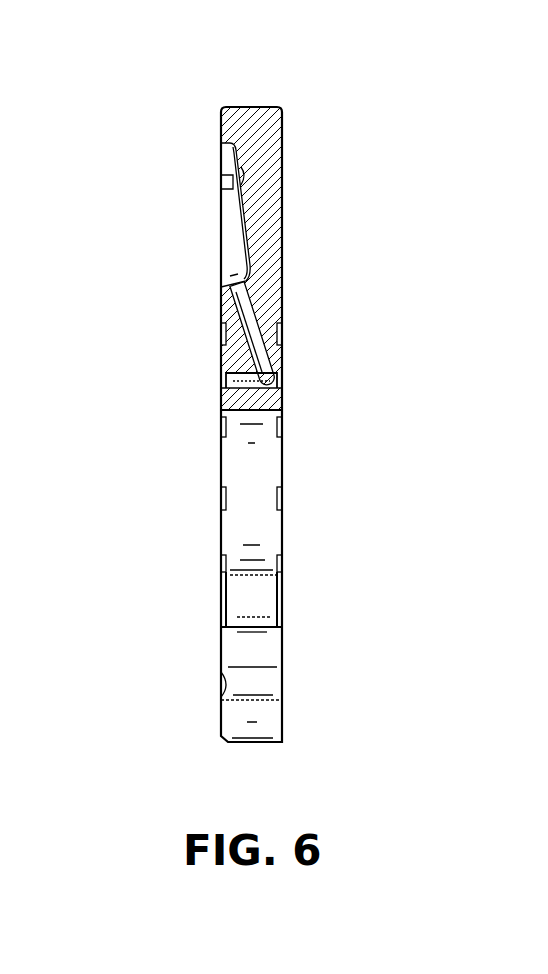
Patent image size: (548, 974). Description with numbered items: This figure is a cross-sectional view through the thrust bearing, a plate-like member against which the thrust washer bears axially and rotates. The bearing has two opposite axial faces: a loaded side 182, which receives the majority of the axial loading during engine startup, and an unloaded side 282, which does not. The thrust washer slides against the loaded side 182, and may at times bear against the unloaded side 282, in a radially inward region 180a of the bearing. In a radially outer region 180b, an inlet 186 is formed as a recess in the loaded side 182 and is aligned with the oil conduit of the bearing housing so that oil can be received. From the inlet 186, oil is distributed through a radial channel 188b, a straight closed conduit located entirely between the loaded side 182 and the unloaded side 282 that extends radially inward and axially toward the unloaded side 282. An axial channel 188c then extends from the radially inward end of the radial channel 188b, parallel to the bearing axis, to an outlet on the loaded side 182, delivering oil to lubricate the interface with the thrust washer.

The radially inward region 180a is at (320, 310).
The radially outer region 180b is at (320, 107).
The loaded side 182 is at (227, 692).
The inlet 186 is at (228, 229).
The radial channel 188b is at (223, 308).
The axial channel 188c is at (223, 382).
The unloaded side 282 is at (282, 693).